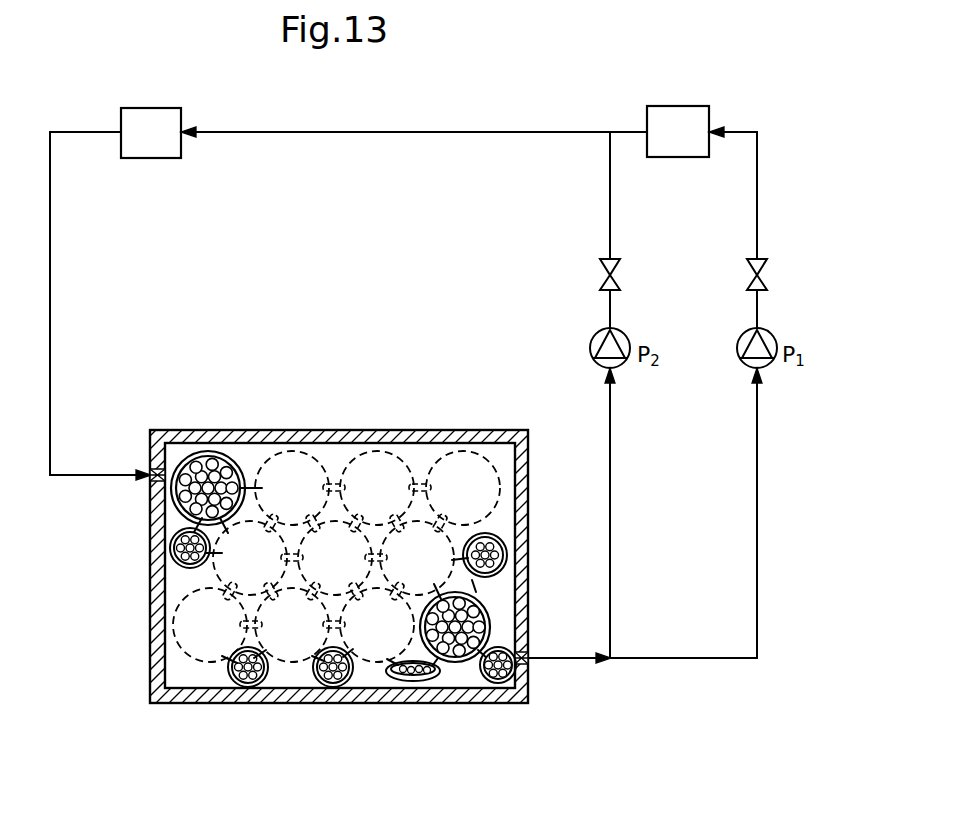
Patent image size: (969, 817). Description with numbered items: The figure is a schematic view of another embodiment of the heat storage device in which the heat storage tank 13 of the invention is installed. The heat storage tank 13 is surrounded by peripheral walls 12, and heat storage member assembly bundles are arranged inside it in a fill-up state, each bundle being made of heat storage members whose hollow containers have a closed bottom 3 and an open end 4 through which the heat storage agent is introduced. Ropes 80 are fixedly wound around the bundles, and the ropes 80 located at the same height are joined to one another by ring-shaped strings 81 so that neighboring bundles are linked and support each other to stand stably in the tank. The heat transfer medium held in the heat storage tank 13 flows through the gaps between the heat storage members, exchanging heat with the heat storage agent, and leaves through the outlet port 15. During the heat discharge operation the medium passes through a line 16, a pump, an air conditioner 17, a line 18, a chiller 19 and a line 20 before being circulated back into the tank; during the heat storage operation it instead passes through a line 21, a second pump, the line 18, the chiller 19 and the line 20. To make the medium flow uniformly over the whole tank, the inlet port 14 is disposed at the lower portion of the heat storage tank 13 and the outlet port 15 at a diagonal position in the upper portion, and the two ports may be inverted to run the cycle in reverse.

The bottom 3 is at (488, 620).
The open end 4 is at (208, 470).
The peripheral walls 12 is at (158, 661).
The heat storage tank 13 is at (387, 420).
The inlet port 14 is at (148, 483).
The outlet port 15 is at (530, 662).
The line 16 is at (758, 463).
The air conditioner 17 is at (670, 104).
The line 18 is at (397, 128).
The chiller 19 is at (158, 108).
The line 20 is at (50, 266).
The line 21 is at (612, 468).
The ropes 80 is at (237, 462).
The ring-shaped strings 81 is at (224, 588).